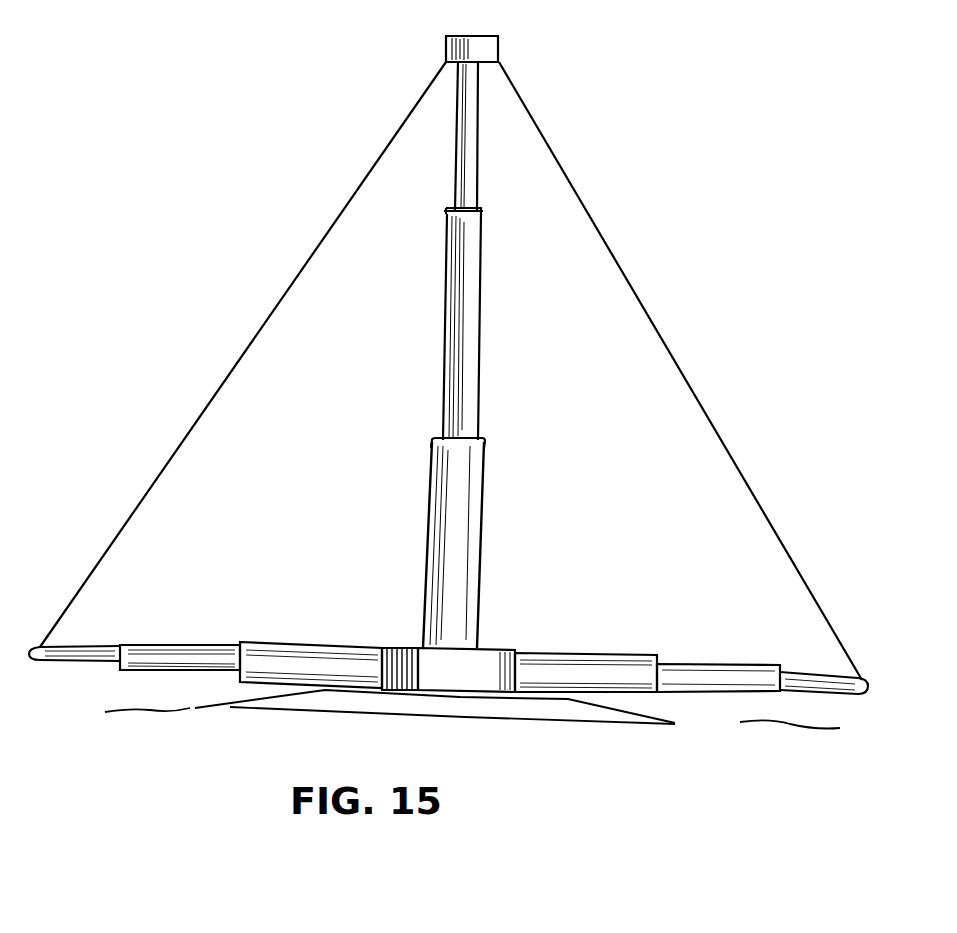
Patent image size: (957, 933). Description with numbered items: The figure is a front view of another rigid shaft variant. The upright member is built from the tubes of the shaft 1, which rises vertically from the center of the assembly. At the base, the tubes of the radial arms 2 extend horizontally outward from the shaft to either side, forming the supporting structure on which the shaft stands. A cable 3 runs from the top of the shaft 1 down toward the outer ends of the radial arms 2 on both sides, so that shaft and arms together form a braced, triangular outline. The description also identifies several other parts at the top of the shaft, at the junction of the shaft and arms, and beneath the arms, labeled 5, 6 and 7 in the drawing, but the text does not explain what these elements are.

The shaft 1 is at (433, 457).
The radial arms 2 is at (636, 657).
The cable 3 is at (582, 194).
The mast top cap 5 is at (494, 48).
The central hub 6 is at (492, 664).
The ground plate 7 is at (568, 715).